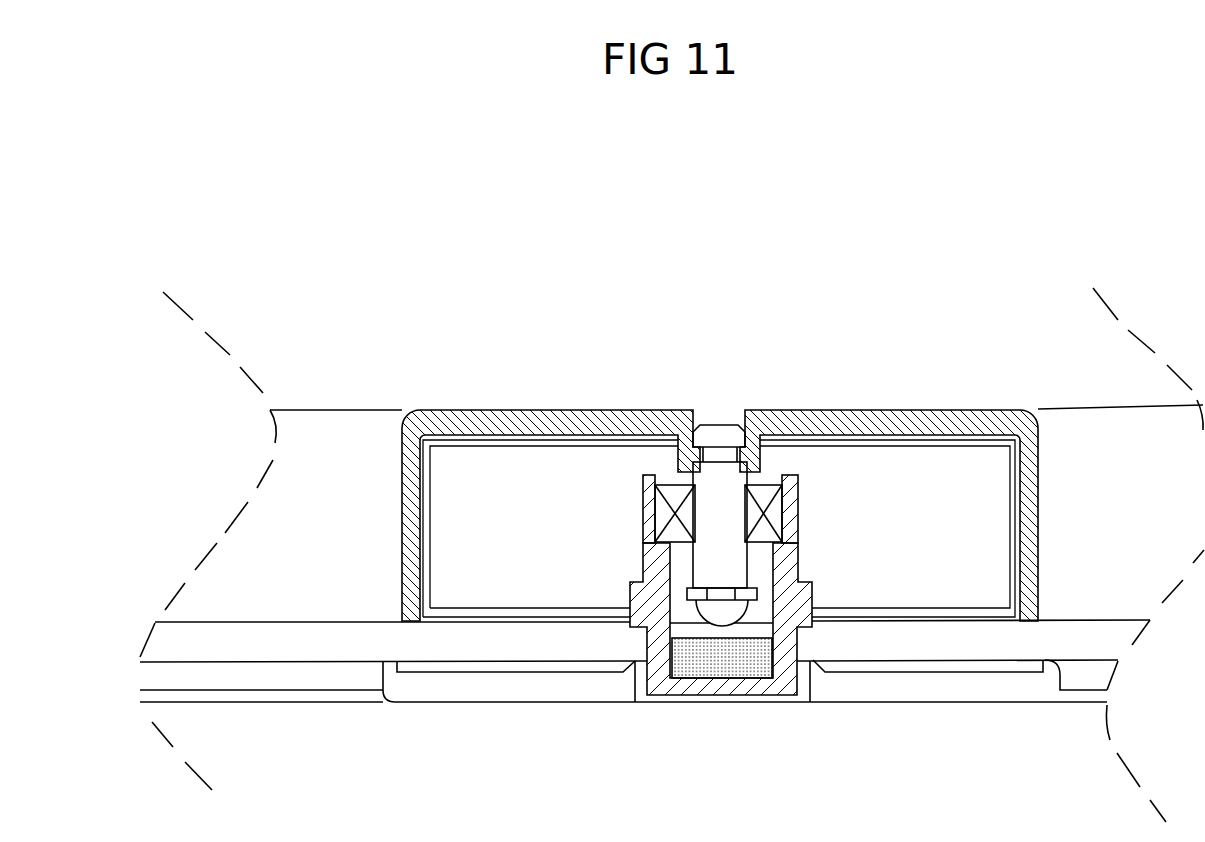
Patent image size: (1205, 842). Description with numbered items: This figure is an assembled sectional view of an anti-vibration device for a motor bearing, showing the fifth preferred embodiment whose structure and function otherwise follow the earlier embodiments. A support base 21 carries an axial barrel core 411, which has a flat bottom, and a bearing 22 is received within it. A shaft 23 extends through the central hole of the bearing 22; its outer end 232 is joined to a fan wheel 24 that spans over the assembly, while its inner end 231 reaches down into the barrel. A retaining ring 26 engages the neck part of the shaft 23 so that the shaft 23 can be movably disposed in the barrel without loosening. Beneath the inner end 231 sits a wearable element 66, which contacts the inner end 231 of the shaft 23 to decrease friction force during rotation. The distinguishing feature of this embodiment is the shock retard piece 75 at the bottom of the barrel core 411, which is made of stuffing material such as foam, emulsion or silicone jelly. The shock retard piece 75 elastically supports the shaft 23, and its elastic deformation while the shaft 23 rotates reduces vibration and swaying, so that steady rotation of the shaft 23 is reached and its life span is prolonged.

The support base 21 is at (910, 690).
The bearing 22 is at (777, 512).
The shaft 23 is at (731, 487).
The inner end 231 is at (733, 612).
The outer end 232 is at (725, 433).
The fan wheel 24 is at (578, 408).
The retaining ring 26 is at (698, 594).
The axial barrel core 411 is at (650, 483).
The wearable element 66 is at (692, 601).
The shock retard piece 75 is at (684, 672).